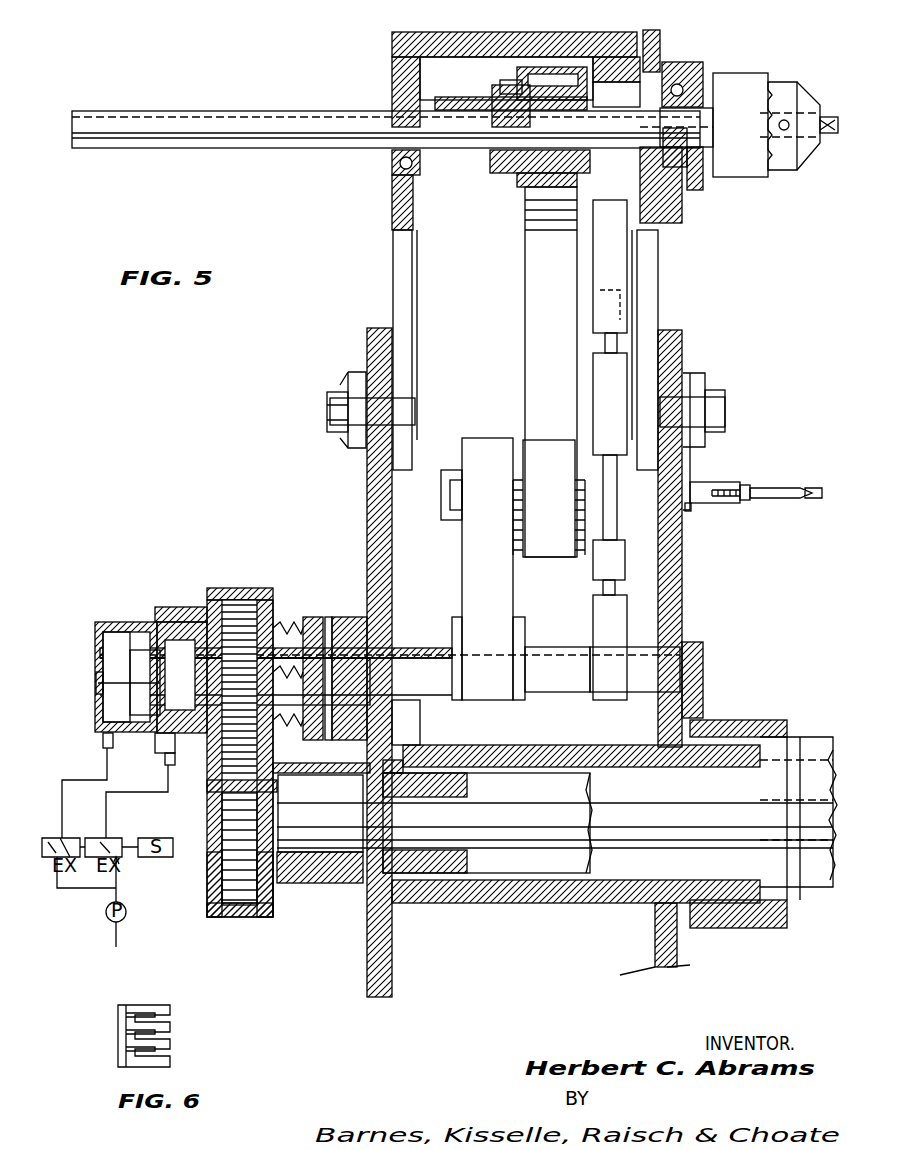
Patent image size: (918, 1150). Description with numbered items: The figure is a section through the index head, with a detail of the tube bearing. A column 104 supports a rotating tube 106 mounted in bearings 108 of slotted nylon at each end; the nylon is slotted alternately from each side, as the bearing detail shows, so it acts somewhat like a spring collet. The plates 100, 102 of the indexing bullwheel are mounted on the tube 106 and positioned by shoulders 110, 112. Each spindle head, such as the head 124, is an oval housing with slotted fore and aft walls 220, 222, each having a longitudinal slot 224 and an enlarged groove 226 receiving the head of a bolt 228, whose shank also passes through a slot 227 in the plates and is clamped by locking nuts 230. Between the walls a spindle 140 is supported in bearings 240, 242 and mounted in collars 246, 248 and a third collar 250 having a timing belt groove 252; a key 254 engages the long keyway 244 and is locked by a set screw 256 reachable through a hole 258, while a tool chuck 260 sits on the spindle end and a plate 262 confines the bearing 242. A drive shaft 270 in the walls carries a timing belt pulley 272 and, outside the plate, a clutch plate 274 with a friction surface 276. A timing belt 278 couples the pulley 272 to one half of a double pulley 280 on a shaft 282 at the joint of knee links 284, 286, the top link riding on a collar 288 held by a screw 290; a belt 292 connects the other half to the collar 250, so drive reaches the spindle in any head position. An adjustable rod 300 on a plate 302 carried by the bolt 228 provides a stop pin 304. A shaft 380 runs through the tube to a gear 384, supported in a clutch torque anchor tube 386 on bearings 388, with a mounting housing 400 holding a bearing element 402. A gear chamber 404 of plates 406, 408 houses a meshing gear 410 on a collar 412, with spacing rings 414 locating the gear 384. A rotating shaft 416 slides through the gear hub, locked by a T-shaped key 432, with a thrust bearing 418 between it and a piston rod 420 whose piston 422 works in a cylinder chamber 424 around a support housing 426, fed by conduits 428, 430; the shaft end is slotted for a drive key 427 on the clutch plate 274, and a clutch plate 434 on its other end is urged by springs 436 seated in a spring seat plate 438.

In FIG. 5, the plate 100 is at (675, 588).
In FIG. 5, the plate 102 is at (385, 588).
In FIG. 5, the column 104 is at (710, 928).
In FIG. 5, the rotating tube 106 is at (578, 903).
In FIG. 5, the bearings 108 is at (705, 700).
In FIG. 6, the bearings 108 is at (140, 1005).
In FIG. 5, the shoulder 110 is at (657, 745).
In FIG. 5, the shoulder 112 is at (392, 735).
In FIG. 5, the head 124 is at (395, 48).
In FIG. 5, the spindle 140 is at (195, 120).
In FIG. 5, the fore wall 220 is at (660, 206).
In FIG. 5, the aft wall 222 is at (392, 205).
In FIG. 5, the longitudinal slot 224 is at (393, 245).
In FIG. 5, the enlarged groove 226 is at (418, 305).
In FIG. 5, the slot 227 is at (362, 372).
In FIG. 5, the bolt 228 is at (400, 410).
In FIG. 5, the locking nuts 230 is at (338, 432).
In FIG. 5, the bearing 240 is at (392, 163).
In FIG. 5, the bearing 242 is at (708, 80).
In FIG. 5, the keyway 244 is at (285, 110).
In FIG. 5, the collar 246 is at (452, 97).
In FIG. 5, the collar 248 is at (555, 67).
In FIG. 5, the collar 250 is at (600, 57).
In FIG. 5, the timing belt groove 252 is at (525, 195).
In FIG. 5, the key 254 is at (492, 95).
In FIG. 5, the set screw 256 is at (510, 80).
In FIG. 5, the hole 258 is at (490, 165).
In FIG. 5, the tool chuck 260 is at (790, 85).
In FIG. 5, the plate 262 is at (703, 185).
In FIG. 5, the drive shaft 270 is at (400, 648).
In FIG. 5, the timing belt pulley 272 is at (523, 625).
In FIG. 5, the clutch plate 274 is at (350, 617).
In FIG. 5, the friction surface 276 is at (330, 617).
In FIG. 5, the timing belt 278 is at (470, 575).
In FIG. 5, the double timing belt pulley 280 is at (518, 440).
In FIG. 5, the shaft 282 is at (441, 490).
In FIG. 5, the knee link 284 is at (625, 556).
In FIG. 5, the knee link 286 is at (620, 365).
In FIG. 5, the collar 288 is at (652, 40).
In FIG. 5, the screw 290 is at (680, 68).
In FIG. 5, the belt 292 is at (525, 372).
In FIG. 5, the adjustable rod 300 is at (725, 482).
In FIG. 5, the plate 302 is at (691, 508).
In FIG. 5, the stop pin 304 is at (775, 488).
In FIG. 5, the shaft 380 is at (335, 830).
In FIG. 5, the gear 384 is at (232, 818).
In FIG. 5, the clutch torque anchor tube 386 is at (500, 780).
In FIG. 5, the bearings 388 is at (395, 760).
In FIG. 5, the mounting housing 400 is at (305, 883).
In FIG. 5, the bearing element 402 is at (360, 800).
In FIG. 5, the gear chamber 404 is at (207, 875).
In FIG. 5, the plate 406 is at (255, 917).
In FIG. 5, the plate 408 is at (210, 898).
In FIG. 5, the meshing gear 410 is at (235, 610).
In FIG. 5, the collar 412 is at (210, 600).
In FIG. 5, the spacing rings 414 is at (210, 792).
In FIG. 5, the rotating shaft 416 is at (172, 622).
In FIG. 5, the thrust bearing 418 is at (157, 740).
In FIG. 5, the piston rod 420 is at (96, 683).
In FIG. 5, the piston 422 is at (103, 650).
In FIG. 5, the cylinder chamber 424 is at (100, 622).
In FIG. 5, the support housing 426 is at (140, 650).
In FIG. 5, the drive key 427 is at (372, 675).
In FIG. 5, the conduit 428 is at (103, 740).
In FIG. 5, the conduit 430 is at (165, 762).
In FIG. 5, the T-shaped key 432 is at (268, 590).
In FIG. 5, the clutch plate 434 is at (312, 617).
In FIG. 5, the springs 436 is at (280, 740).
In FIG. 5, the spring seat plate 438 is at (282, 620).